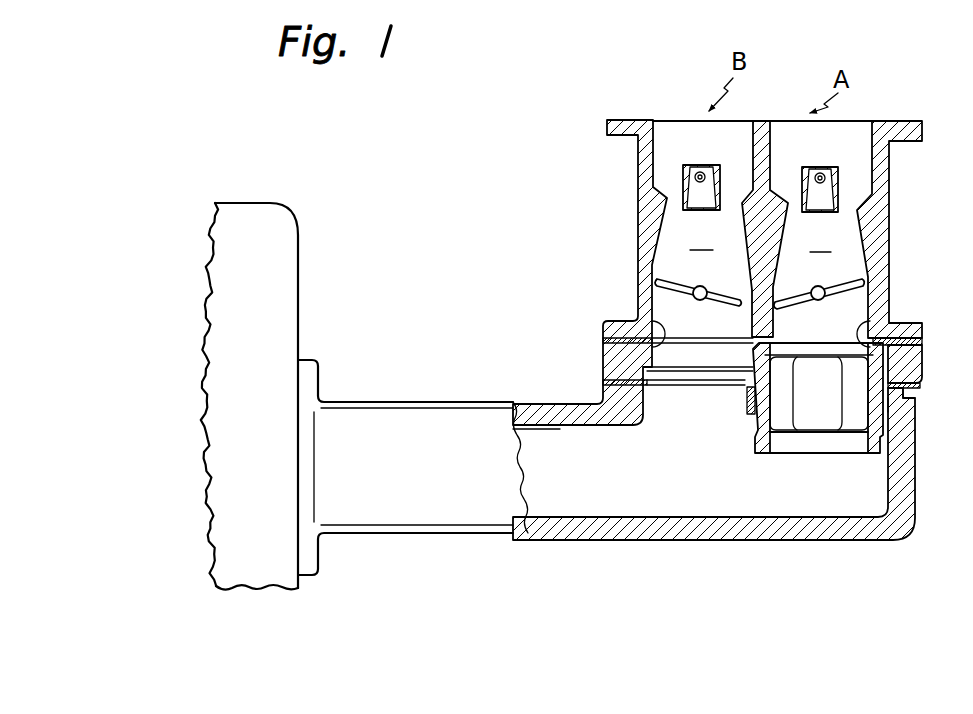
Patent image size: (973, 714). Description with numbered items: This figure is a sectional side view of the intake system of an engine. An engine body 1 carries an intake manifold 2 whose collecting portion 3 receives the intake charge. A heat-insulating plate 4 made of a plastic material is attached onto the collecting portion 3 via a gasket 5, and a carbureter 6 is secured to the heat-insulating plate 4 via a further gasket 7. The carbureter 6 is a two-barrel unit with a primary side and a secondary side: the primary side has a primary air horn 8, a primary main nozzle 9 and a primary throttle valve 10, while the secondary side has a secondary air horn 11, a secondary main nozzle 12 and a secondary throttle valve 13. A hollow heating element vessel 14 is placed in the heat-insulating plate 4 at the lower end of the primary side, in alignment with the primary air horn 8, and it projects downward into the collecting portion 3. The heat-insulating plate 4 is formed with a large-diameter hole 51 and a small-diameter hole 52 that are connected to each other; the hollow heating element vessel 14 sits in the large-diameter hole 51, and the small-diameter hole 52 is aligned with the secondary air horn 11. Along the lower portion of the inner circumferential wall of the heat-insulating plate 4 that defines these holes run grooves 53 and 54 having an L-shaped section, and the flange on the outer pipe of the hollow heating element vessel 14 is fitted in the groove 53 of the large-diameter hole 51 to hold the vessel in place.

The engine body 1 is at (298, 248).
The intake manifold 2 is at (430, 528).
The collecting portion 3 is at (780, 515).
The heat-insulating plate 4 is at (921, 371).
The gasket 5 is at (916, 393).
The carbureter 6 is at (884, 215).
The gasket 7 is at (925, 341).
The primary air horn 8 is at (820, 210).
The primary main nozzle 9 is at (820, 173).
The primary throttle valve 10 is at (865, 257).
The secondary air horn 11 is at (702, 208).
The secondary main nozzle 12 is at (700, 172).
The secondary throttle valve 13 is at (662, 282).
The hollow heating element vessel 14 is at (748, 426).
The large-diameter hole 51 is at (864, 322).
The small-diameter hole 52 is at (634, 320).
The groove 53 is at (889, 406).
The groove 54 is at (648, 381).